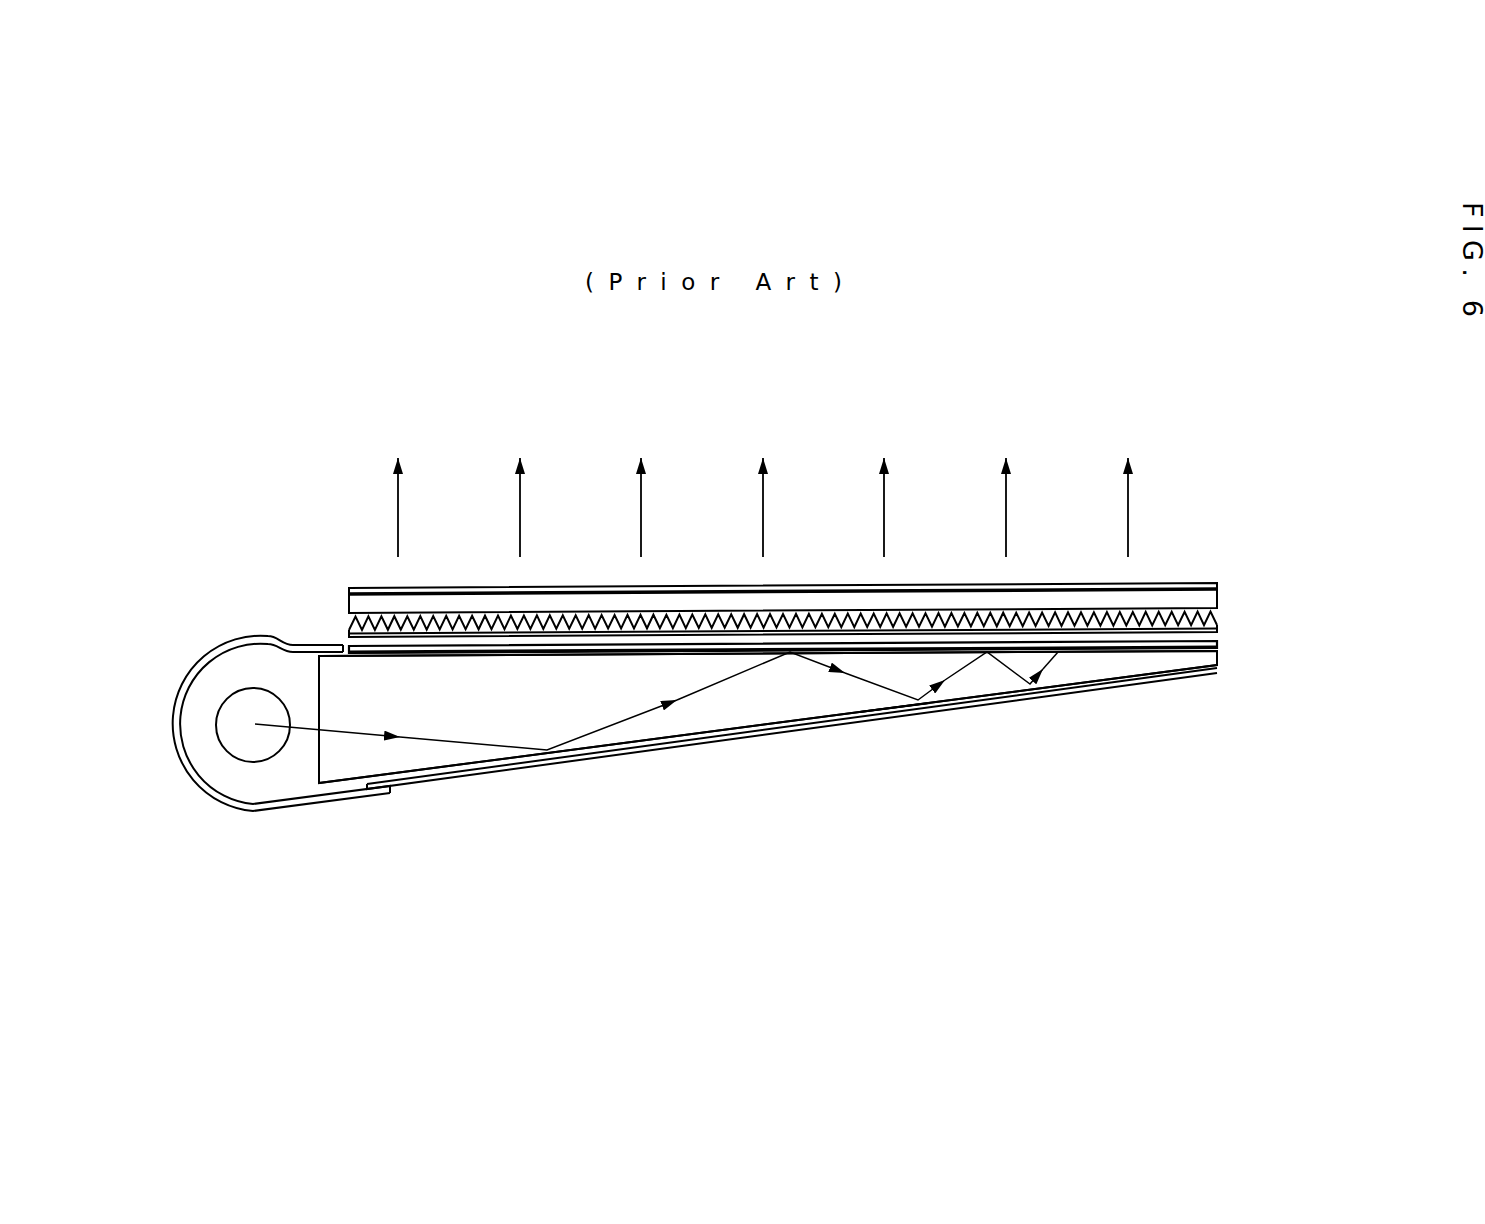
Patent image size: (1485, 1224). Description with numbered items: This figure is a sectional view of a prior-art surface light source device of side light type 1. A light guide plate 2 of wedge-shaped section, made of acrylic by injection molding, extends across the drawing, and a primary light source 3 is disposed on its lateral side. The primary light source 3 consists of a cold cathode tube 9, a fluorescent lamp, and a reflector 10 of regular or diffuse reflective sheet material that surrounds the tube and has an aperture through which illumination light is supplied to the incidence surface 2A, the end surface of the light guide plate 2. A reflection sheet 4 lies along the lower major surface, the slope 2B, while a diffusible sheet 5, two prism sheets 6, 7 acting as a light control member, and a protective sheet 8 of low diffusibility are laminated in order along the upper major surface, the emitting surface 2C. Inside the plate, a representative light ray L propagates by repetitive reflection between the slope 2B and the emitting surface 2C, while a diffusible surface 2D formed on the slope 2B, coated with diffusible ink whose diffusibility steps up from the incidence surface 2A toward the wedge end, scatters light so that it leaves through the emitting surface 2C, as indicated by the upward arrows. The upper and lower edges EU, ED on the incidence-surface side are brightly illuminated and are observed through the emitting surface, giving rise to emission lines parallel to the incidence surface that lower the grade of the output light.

The surface light source device of side light type 1 is at (987, 841).
The light guide plate 2 is at (735, 712).
The incidence surface 2A is at (320, 705).
The slope 2B is at (565, 750).
The emitting surface 2C is at (558, 651).
The diffusible surface 2D is at (892, 707).
The primary light source 3 is at (176, 648).
The reflection sheet 4 is at (828, 726).
The diffusible sheet 5 is at (1217, 646).
The prism sheet 6 is at (1214, 625).
The prism sheet 7 is at (1208, 600).
The protective sheet 8 is at (1217, 583).
The cold cathode tube 9 is at (265, 752).
The reflector 10 is at (188, 777).
The light ray L is at (453, 743).
The upper edge on the side of the incidence surface EU is at (320, 657).
The lower edge on the side of the incidence surface ED is at (323, 789).